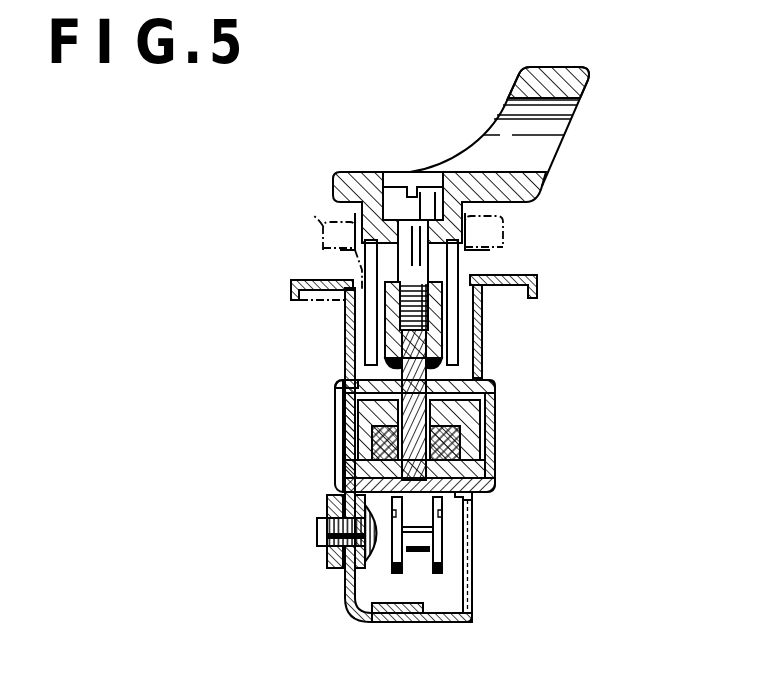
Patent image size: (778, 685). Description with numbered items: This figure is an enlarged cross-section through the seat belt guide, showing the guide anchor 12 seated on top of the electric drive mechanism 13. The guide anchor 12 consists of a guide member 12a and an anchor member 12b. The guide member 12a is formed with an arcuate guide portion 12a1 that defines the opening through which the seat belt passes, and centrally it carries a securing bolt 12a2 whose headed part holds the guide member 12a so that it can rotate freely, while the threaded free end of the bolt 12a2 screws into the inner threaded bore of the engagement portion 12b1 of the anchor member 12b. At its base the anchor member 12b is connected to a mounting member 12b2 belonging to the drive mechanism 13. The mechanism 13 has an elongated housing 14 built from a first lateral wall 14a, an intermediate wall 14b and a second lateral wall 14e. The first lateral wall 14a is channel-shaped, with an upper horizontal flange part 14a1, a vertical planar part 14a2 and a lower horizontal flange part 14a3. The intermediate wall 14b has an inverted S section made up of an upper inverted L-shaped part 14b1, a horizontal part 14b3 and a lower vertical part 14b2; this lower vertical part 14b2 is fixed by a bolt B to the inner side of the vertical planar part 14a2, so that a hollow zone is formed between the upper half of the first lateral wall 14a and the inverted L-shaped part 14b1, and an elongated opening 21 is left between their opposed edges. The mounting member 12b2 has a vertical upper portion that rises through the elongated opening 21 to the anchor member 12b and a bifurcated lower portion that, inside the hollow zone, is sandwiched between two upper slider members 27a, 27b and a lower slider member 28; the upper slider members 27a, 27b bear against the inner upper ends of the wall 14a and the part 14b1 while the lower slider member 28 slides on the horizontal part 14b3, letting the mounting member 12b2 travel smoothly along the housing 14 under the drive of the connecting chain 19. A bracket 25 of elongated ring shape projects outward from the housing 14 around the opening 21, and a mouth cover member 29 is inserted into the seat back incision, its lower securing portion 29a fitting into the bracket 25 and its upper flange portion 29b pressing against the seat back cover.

The guide anchor 12 is at (548, 184).
The guide member 12a is at (568, 122).
The arcuate guide portion 12a1 is at (545, 75).
The securing bolt 12a2 is at (397, 195).
The anchor member 12b is at (443, 338).
The engagement portion 12b1 is at (395, 330).
The mounting member 12b2 is at (497, 398).
The electric drive mechanism 13 is at (505, 468).
The housing 14 is at (342, 483).
The first lateral wall 14a is at (345, 604).
The upper horizontal flange part 14a1 is at (338, 385).
The vertical planar part 14a2 is at (348, 583).
The lower horizontal flange part 14a3 is at (370, 622).
The intermediate wall 14b is at (482, 366).
The upper inverted L-shaped part 14b1 is at (492, 445).
The lower vertical part 14b2 is at (412, 620).
The horizontal part 14b3 is at (470, 500).
The second lateral wall 14e is at (472, 612).
The connecting chain 19 is at (445, 548).
The elongated opening 21 is at (397, 365).
The bracket 25 is at (505, 275).
The upper slider member 27a is at (345, 420).
The upper slider member 27b is at (346, 457).
The lower slider member 28 is at (500, 480).
The mouth cover member 29 is at (503, 233).
The lower securing portion 29a is at (300, 300).
The upper flange portion 29b is at (323, 218).
The bolt B is at (318, 530).